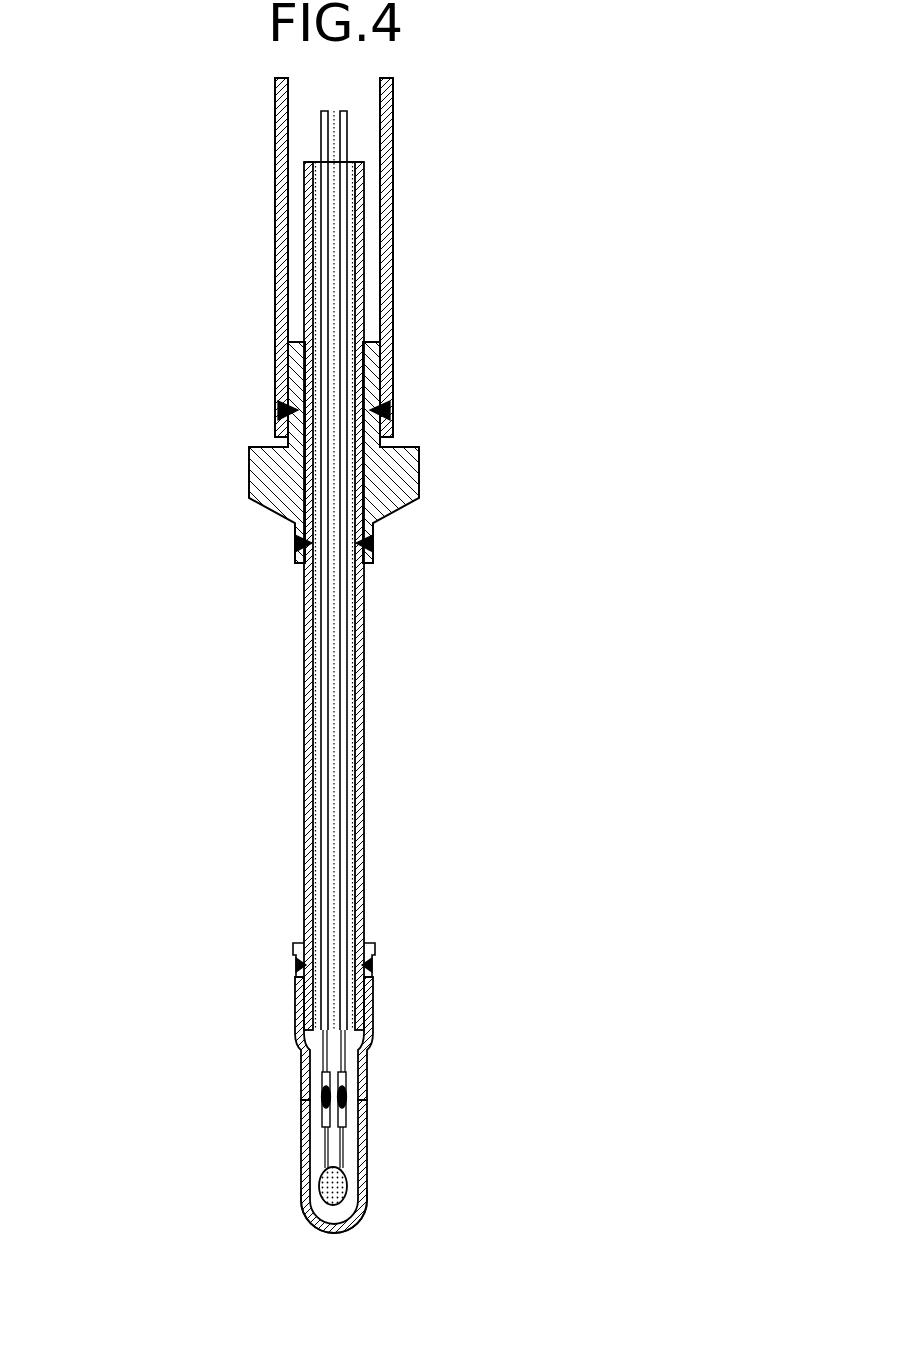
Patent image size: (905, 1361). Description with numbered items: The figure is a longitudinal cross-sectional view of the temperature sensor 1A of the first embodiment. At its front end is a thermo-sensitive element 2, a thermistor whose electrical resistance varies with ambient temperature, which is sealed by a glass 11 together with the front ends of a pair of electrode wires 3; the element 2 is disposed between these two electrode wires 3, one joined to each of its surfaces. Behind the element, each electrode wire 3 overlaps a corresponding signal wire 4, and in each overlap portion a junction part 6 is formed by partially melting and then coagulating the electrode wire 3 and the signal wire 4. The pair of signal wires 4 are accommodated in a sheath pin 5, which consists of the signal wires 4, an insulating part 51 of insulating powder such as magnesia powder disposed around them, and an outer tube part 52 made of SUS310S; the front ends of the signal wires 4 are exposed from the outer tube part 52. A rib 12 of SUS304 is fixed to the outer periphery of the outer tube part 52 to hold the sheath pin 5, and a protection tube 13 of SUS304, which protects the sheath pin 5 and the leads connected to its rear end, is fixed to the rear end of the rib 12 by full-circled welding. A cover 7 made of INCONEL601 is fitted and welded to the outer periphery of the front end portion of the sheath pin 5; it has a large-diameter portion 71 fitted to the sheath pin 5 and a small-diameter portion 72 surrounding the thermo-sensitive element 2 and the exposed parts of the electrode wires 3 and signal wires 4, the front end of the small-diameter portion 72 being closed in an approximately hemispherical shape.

The temperature sensor 1A is at (180, 819).
The thermo-sensitive element 2 is at (346, 1172).
The electrode wires 3 is at (345, 1135).
The signal wires 4 is at (322, 870).
The sheath pin 5 is at (419, 596).
The insulating part 51 is at (363, 612).
The outer tube part 52 is at (363, 731).
The junction part 6 is at (322, 1092).
The cover 7 is at (354, 1102).
The large-diameter portion 71 is at (368, 1013).
The small-diameter portion 72 is at (302, 1172).
The glass 11 is at (335, 1203).
The rib 12 is at (407, 470).
The protection tube 13 is at (387, 225).